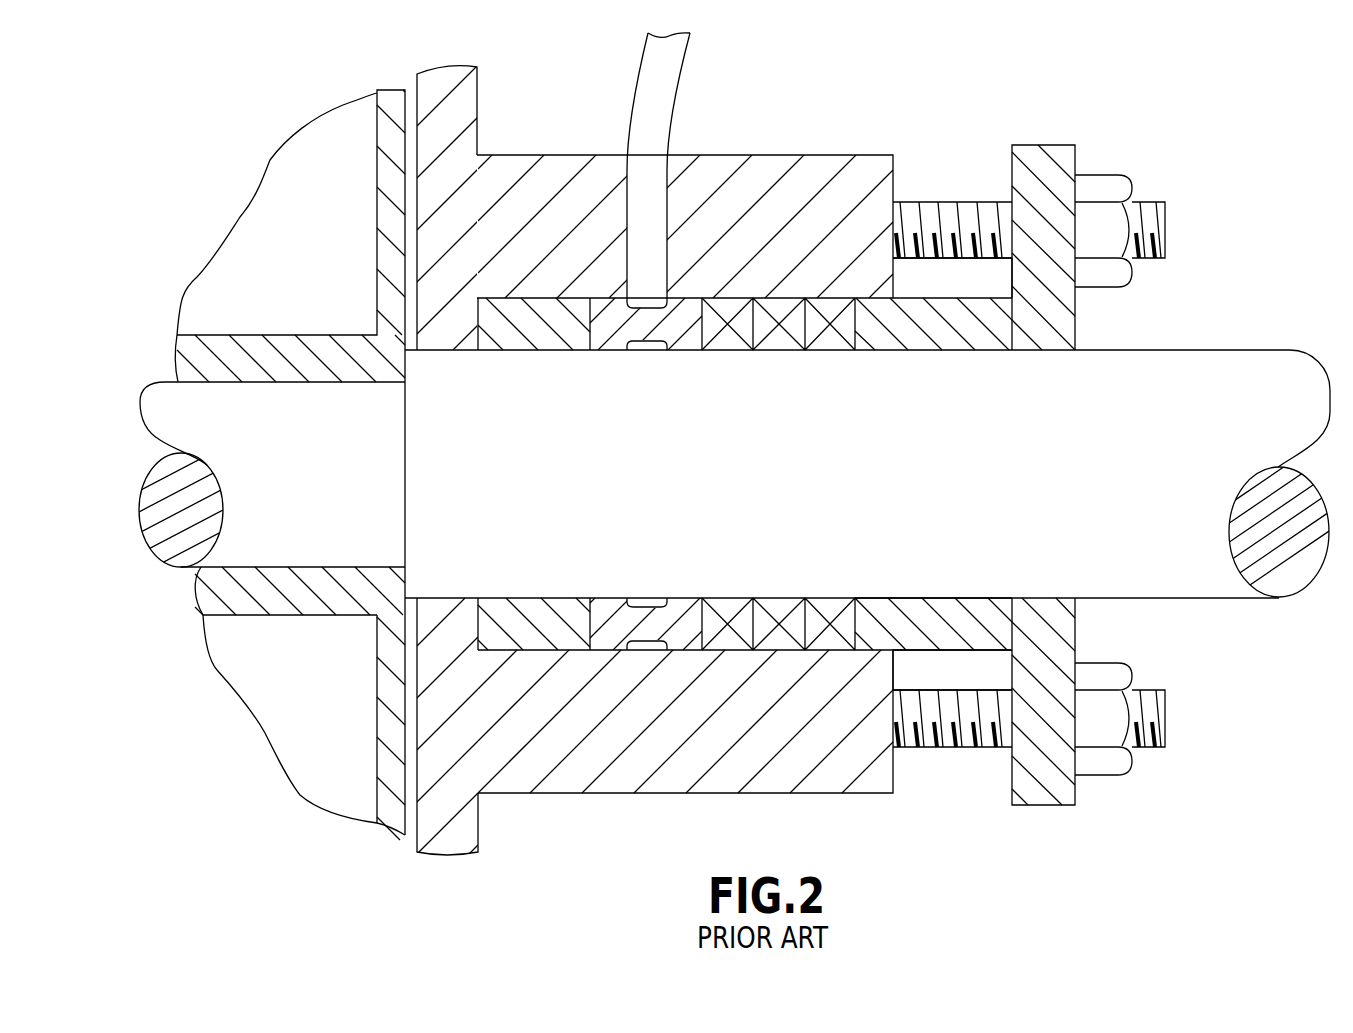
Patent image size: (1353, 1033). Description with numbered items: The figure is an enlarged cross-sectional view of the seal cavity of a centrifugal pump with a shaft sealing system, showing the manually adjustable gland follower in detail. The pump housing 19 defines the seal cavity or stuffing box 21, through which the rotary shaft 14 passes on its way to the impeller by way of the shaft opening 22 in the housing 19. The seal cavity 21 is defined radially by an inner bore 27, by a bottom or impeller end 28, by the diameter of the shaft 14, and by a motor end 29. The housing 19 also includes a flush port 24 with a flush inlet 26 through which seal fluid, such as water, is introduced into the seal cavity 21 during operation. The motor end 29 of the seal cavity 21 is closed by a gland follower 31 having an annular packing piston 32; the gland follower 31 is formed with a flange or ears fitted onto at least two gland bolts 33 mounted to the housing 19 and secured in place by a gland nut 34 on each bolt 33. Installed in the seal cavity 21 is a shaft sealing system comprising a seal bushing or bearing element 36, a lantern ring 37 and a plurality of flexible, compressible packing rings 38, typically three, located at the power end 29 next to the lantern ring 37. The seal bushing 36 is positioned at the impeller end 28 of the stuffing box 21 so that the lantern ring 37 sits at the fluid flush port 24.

The rotary shaft 14 is at (1237, 370).
The housing 19 is at (787, 207).
The seal cavity 21 is at (658, 505).
The shaft opening 22 is at (442, 352).
The flush port 24 is at (648, 297).
The flush inlet 26 is at (640, 120).
The inner bore 27 is at (510, 642).
The impeller end 28 is at (446, 514).
The motor end 29 is at (848, 523).
The gland follower 31 is at (1035, 143).
The annular packing piston 32 is at (872, 330).
The gland bolt 33 is at (1150, 222).
The gland nut 34 is at (1108, 188).
The seal bushing 36 is at (505, 333).
The lantern ring 37 is at (607, 352).
The packing rings 38 is at (828, 607).